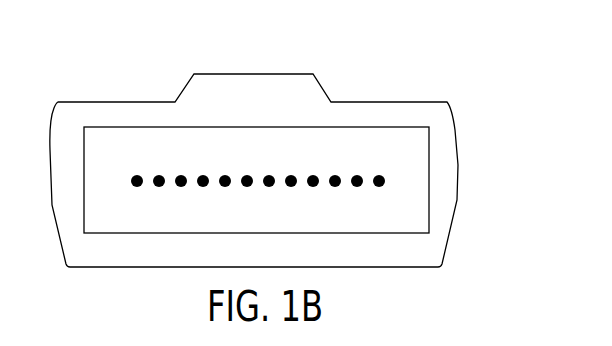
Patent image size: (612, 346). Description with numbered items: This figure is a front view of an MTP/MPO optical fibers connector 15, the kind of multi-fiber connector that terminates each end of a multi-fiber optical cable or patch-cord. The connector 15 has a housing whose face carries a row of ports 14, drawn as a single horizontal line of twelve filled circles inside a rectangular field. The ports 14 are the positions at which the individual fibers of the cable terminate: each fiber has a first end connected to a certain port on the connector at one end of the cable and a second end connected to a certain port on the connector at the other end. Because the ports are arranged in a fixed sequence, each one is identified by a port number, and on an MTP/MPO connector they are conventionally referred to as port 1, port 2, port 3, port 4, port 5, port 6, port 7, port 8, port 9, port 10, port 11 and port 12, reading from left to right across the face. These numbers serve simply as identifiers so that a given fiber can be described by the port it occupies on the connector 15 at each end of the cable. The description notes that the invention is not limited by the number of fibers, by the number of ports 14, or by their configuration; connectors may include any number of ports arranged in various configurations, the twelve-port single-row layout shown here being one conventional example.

The ports 14 is at (259, 152).
The MTP/MPO connector 15 is at (443, 85).
The port 1 is at (137, 193).
The port 2 is at (159, 193).
The port 3 is at (181, 193).
The port 4 is at (203, 193).
The port 5 is at (225, 193).
The port 6 is at (247, 193).
The port 7 is at (269, 193).
The port 8 is at (291, 193).
The port 9 is at (313, 193).
The port 10 is at (335, 193).
The port 11 is at (357, 193).
The port 12 is at (379, 193).